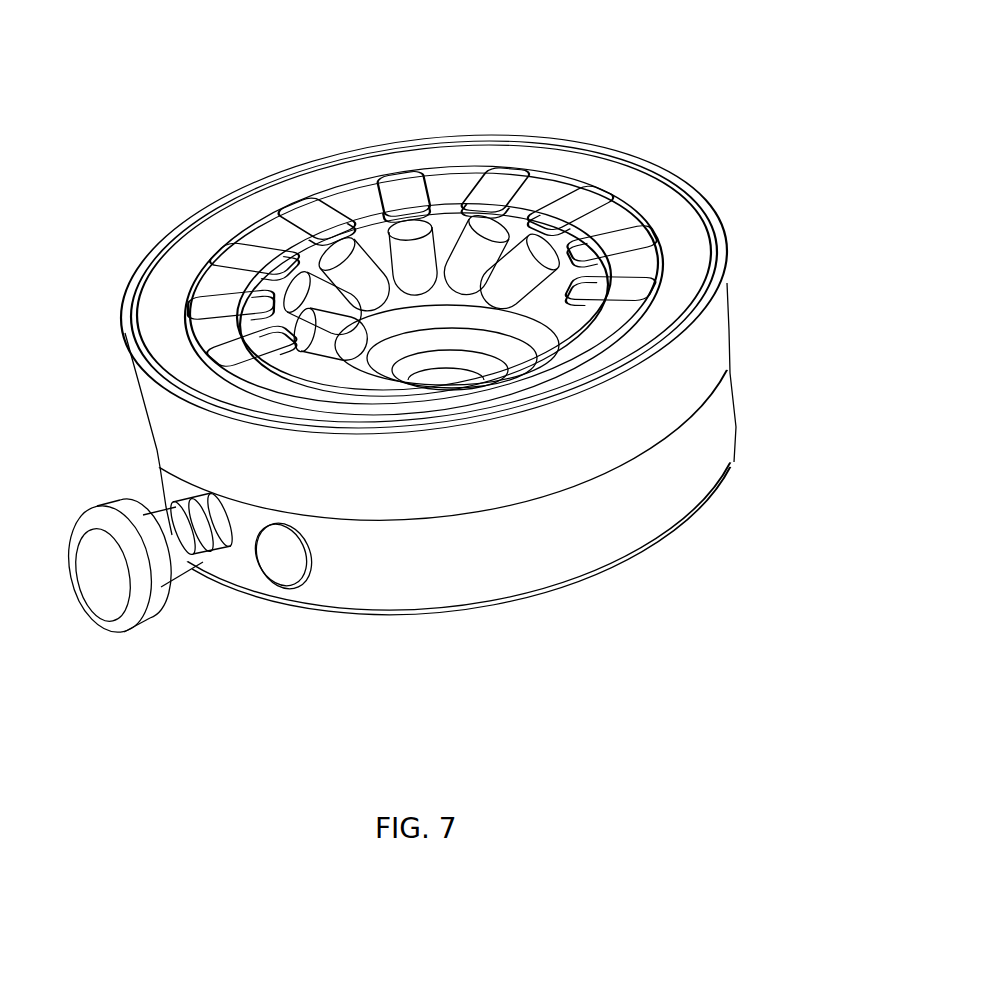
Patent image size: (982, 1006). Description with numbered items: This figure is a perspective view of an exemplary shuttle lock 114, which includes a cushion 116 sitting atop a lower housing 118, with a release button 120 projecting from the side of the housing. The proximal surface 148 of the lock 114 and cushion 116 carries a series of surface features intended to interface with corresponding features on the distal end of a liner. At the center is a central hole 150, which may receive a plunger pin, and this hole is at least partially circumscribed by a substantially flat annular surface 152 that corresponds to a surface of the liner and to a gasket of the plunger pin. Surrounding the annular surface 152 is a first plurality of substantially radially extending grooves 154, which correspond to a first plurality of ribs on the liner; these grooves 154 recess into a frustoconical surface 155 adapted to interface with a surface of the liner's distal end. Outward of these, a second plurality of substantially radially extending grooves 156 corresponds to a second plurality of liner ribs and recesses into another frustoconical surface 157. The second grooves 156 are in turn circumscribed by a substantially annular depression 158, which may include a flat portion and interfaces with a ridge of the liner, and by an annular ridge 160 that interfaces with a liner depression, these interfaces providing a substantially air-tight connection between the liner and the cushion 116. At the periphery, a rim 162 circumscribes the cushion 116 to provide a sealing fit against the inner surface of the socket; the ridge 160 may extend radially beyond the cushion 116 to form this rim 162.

The shuttle lock 114 is at (180, 175).
The cushion 116 is at (167, 430).
The lower housing 118 is at (467, 582).
The release button 120 is at (150, 612).
The proximal surface 148 is at (497, 120).
The central hole 150 is at (440, 368).
The substantially flat annular surface 152 is at (497, 358).
The first plurality of substantially radially extending grooves 154 is at (343, 270).
The frustoconical surface 155 is at (447, 240).
The second plurality of substantially radially extending grooves 156 is at (297, 222).
The frustoconical surface 157 is at (553, 200).
The substantially annular depression 158 is at (170, 335).
The ridge 160 is at (130, 320).
The rim 162 is at (730, 260).